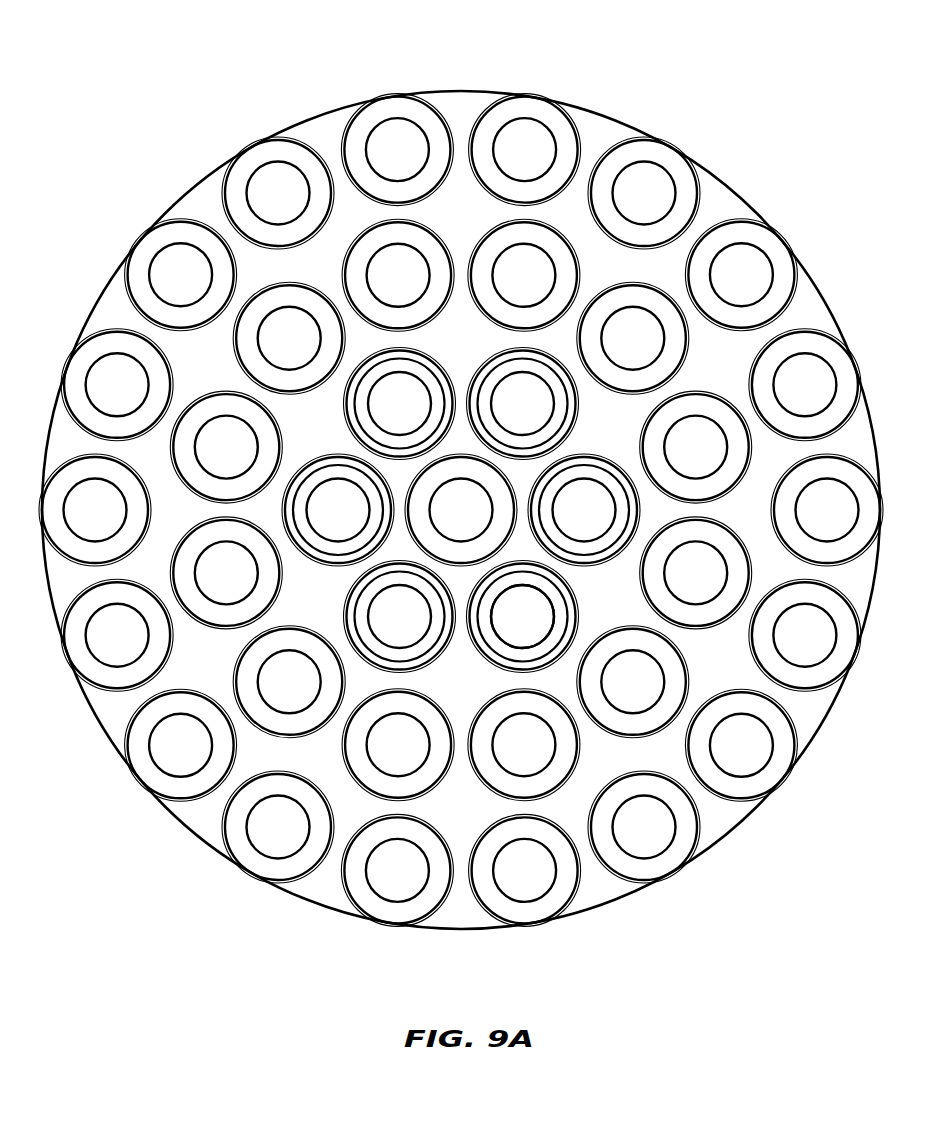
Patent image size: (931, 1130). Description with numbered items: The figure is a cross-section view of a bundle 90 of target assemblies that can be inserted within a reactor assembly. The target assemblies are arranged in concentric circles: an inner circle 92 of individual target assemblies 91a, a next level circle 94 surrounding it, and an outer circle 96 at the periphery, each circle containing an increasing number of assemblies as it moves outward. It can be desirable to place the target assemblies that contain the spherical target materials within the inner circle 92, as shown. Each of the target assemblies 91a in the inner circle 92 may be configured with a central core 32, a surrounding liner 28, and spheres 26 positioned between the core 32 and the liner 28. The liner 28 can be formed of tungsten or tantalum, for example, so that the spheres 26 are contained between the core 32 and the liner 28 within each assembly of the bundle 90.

The bundle 90 is at (637, 120).
The outer circle 96 is at (420, 100).
The next level circle 94 is at (423, 225).
The inner circle 92 is at (461, 543).
The target assembly 91a is at (530, 634).
The liner 28 is at (547, 617).
The spheres 26 is at (559, 616).
The core 32 is at (499, 606).